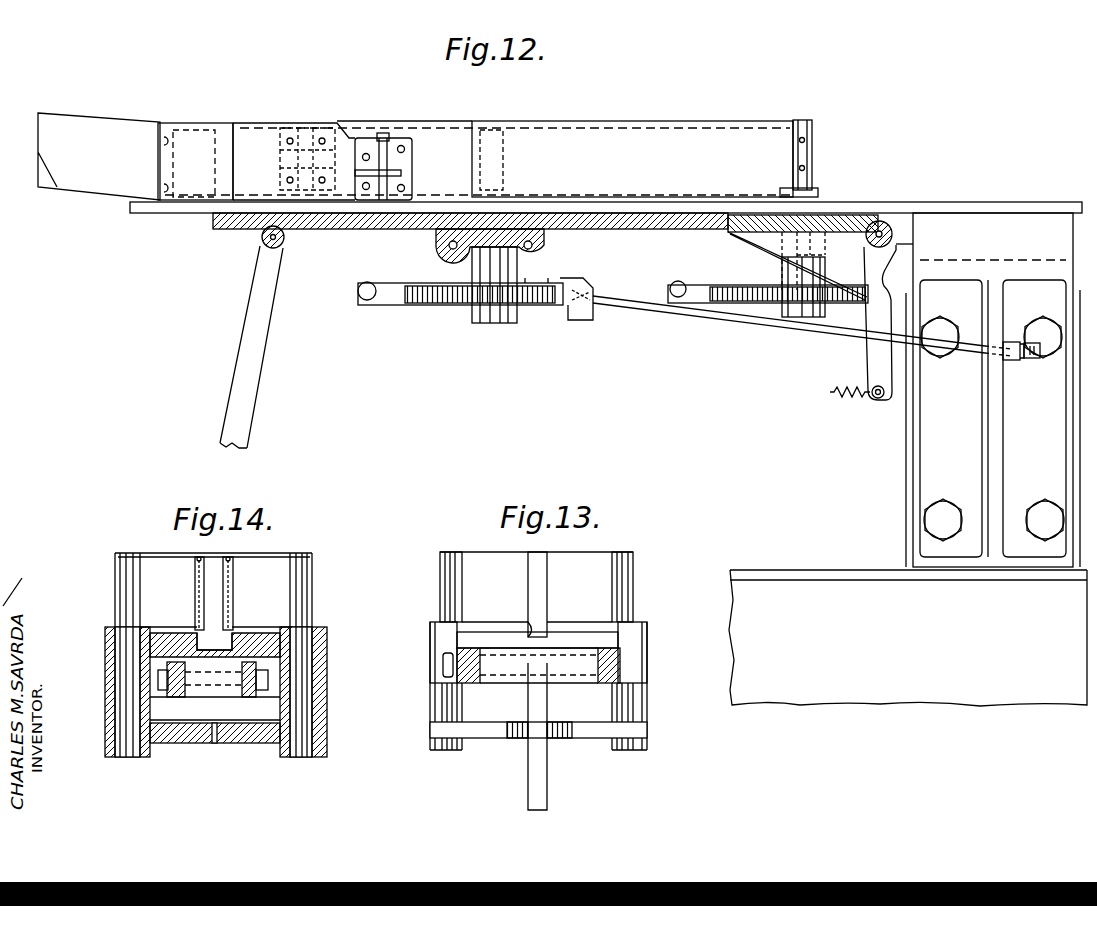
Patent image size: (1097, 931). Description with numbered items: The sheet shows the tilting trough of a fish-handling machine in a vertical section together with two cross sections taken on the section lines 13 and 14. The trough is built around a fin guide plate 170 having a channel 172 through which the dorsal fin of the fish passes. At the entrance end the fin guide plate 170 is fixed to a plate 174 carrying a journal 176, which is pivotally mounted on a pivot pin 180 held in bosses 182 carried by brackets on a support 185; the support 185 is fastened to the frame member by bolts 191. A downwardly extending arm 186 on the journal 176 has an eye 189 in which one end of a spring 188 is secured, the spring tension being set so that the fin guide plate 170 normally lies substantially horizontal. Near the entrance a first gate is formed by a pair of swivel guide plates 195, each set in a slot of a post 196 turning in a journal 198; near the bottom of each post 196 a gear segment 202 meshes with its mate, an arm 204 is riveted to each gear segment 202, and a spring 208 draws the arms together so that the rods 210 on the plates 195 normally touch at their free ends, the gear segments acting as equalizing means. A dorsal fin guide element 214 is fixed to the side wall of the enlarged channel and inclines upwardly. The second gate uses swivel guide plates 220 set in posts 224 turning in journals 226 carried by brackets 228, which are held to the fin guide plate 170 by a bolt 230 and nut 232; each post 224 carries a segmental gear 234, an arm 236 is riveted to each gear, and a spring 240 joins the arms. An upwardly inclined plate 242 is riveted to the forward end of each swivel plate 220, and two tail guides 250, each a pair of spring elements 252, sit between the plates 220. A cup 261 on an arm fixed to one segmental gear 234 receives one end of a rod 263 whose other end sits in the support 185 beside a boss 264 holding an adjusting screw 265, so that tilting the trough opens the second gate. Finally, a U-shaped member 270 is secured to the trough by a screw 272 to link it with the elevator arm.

In FIG. 12, the section line 13— 13 is at (875, 213).
In FIG. 12, the section line 14— 14 is at (484, 100).
In FIG. 12, the fin guide plate 170 is at (620, 222).
In FIG. 14, the fin guide plate 170 is at (252, 636).
In FIG. 13, the fin guide plate 170 is at (563, 632).
In FIG. 14, the channel 172 is at (210, 647).
In FIG. 13, the channel 172 is at (530, 622).
In FIG. 12, the plate 174 is at (743, 258).
In FIG. 12, the journal 176 is at (886, 220).
In FIG. 12, the pivot pin 180 is at (897, 233).
In FIG. 13, the pivot pin 180 is at (627, 663).
In FIG. 13, the bosses 182 is at (472, 682).
In FIG. 12, the support 185 is at (997, 436).
In FIG. 12, the arm 186 is at (868, 362).
In FIG. 13, the arm 186 is at (547, 787).
In FIG. 12, the spring 188 is at (833, 395).
In FIG. 12, the eye 189 is at (873, 400).
In FIG. 12, the bolts 191 is at (1033, 512).
In FIG. 12, the swivel guide plates 195 is at (652, 142).
In FIG. 13, the swivel guide plates 195 is at (552, 557).
In FIG. 12, the post 196 is at (812, 138).
In FIG. 13, the post 196 is at (440, 588).
In FIG. 13, the journal 198 is at (432, 716).
In FIG. 12, the gear segment 202 is at (760, 304).
In FIG. 13, the gear segment 202 is at (498, 738).
In FIG. 12, the arm 204 is at (700, 304).
In FIG. 12, the spring 208 is at (670, 290).
In FIG. 12, the rod 210 is at (445, 123).
In FIG. 14, the rod 210 is at (197, 567).
In FIG. 14, the dorsal fin guide element 214 is at (205, 588).
In FIG. 14, the swivel guide plates 220 is at (243, 566).
In FIG. 14, the post 224 is at (298, 755).
In FIG. 14, the journal 226 is at (108, 679).
In FIG. 14, the bracket 228 is at (215, 696).
In FIG. 14, the bolt 230 is at (262, 690).
In FIG. 14, the nut 232 is at (168, 690).
In FIG. 12, the segmental gear 234 is at (435, 305).
In FIG. 14, the segmental gear 234 is at (207, 743).
In FIG. 12, the arm 236 is at (383, 306).
In FIG. 12, the spring 240 is at (367, 282).
In FIG. 12, the plate 242 is at (92, 183).
In FIG. 12, the tail guides 250 is at (200, 133).
In FIG. 12, the spring elements 252 is at (270, 132).
In FIG. 12, the cup 261 is at (572, 320).
In FIG. 12, the rod 263 is at (810, 308).
In FIG. 12, the boss 264 is at (1009, 362).
In FIG. 12, the adjusting screw 265 is at (1037, 358).
In FIG. 12, the U-shaped member 270 is at (257, 363).
In FIG. 12, the screw 272 is at (286, 241).